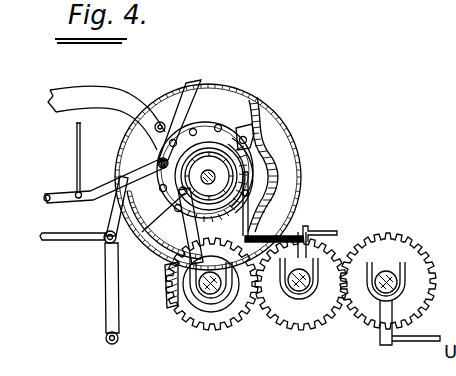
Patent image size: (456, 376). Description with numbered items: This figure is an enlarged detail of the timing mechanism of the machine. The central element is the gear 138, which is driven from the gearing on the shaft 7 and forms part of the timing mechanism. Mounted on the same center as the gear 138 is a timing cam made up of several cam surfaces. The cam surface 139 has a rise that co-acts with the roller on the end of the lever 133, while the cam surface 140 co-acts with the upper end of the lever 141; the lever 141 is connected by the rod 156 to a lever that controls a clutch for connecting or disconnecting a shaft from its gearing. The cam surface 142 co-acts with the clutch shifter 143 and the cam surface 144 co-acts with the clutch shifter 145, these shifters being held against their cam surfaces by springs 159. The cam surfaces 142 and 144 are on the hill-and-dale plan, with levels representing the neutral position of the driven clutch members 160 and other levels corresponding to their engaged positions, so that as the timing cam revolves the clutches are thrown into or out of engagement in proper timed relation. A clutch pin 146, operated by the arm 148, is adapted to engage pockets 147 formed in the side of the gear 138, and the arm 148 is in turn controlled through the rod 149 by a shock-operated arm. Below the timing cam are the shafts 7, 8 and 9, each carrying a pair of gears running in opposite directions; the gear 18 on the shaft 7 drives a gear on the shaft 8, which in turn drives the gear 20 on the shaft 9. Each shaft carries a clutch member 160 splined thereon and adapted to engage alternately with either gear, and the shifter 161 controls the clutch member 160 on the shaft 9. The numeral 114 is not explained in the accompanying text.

The frame 114 is at (380, 2).
The lever 133 is at (66, 93).
The gear 138 is at (204, 84).
The cam surface 139 is at (263, 108).
The cam surface 140 is at (247, 131).
The cam surface 142 is at (253, 143).
The cam surface 144 is at (256, 156).
The pockets 147 is at (223, 122).
The clutch pin 146 is at (157, 157).
The arm 148 is at (106, 190).
The rod 149 is at (76, 152).
The rod 156 is at (72, 249).
The lever 141 is at (108, 277).
The clutch shifter 145 is at (165, 258).
The springs 159 is at (251, 190).
The clutch shifter 143 is at (262, 236).
The shaft 7 is at (203, 300).
The gear 18 is at (232, 319).
The shaft 9 is at (288, 320).
The shaft 8 is at (306, 296).
The gear 20 is at (413, 258).
The shifter 161 is at (387, 334).
The clutch members 160 is at (212, 296).